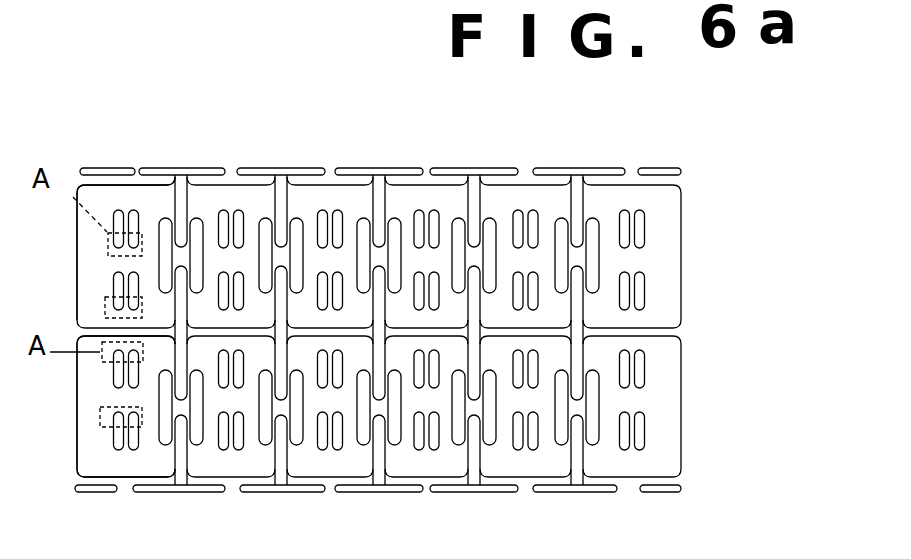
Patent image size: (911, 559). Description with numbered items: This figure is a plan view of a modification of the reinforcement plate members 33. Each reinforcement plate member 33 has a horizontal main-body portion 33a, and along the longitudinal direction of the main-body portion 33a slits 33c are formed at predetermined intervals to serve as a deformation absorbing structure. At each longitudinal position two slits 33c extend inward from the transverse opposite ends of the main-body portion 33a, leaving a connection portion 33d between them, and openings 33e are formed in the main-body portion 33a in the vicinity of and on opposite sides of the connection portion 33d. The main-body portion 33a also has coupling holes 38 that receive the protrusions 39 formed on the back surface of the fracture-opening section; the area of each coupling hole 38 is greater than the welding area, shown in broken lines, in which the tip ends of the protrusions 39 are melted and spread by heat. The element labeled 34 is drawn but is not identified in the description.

The reinforcement plate member 33 is at (85, 305).
The horizontal main-body portion 33a is at (152, 200).
The slit 33c is at (475, 292).
The connection portion 33d is at (374, 243).
The opening 33e is at (364, 238).
The connecting bar 34 is at (330, 170).
The coupling hole 38 is at (137, 216).
The protrusion 39 is at (113, 257).